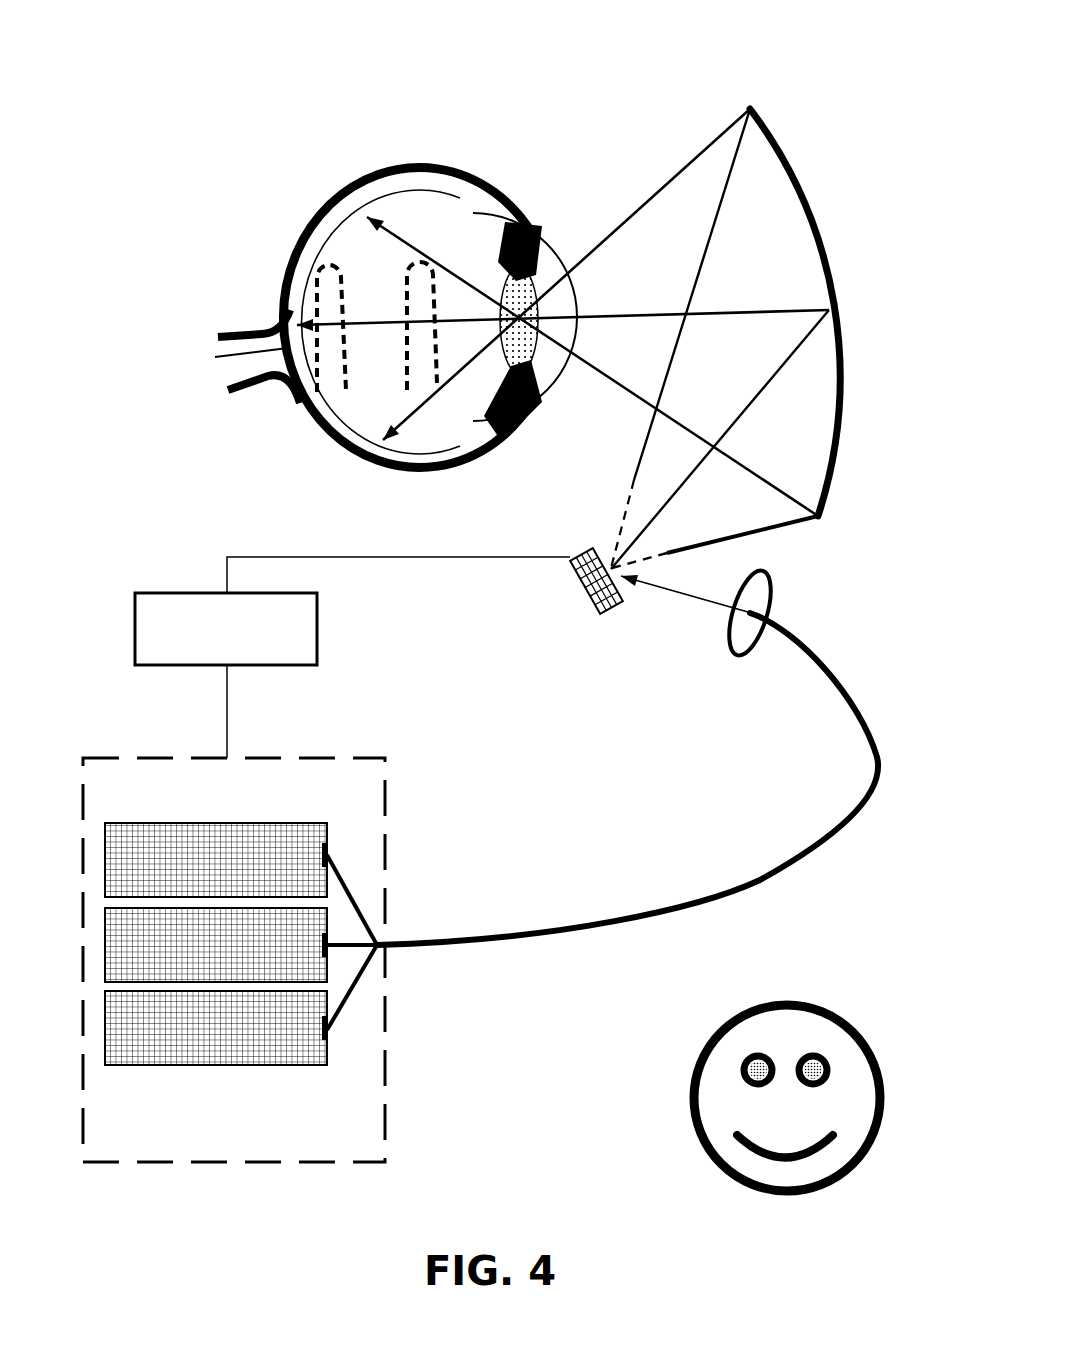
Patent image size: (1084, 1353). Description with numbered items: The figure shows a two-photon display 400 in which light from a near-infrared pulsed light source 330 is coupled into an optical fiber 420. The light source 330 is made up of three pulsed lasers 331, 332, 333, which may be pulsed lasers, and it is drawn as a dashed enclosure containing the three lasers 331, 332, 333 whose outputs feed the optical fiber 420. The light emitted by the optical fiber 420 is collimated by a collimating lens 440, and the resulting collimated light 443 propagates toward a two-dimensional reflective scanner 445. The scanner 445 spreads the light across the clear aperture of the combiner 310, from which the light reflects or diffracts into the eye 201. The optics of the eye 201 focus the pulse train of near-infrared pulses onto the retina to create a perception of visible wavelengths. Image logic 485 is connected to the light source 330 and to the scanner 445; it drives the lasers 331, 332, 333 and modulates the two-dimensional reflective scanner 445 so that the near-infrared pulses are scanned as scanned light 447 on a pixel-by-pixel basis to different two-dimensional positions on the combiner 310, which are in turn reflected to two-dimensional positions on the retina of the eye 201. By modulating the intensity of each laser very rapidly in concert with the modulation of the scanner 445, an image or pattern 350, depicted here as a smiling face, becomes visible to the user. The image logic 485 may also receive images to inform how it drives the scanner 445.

The two-photon display 400 is at (815, 40).
The eye 201 is at (306, 163).
The combiner 310 is at (800, 174).
The scanned light 447 is at (634, 423).
The two-dimensional reflective scanner 445 is at (584, 597).
The collimated light 443 is at (683, 597).
The collimating lens 440 is at (743, 657).
The optical fiber 420 is at (868, 790).
The image logic 485 is at (226, 675).
The near-infrared pulsed light source 330 is at (234, 960).
The pulsed laser 331 is at (216, 860).
The pulsed laser 332 is at (216, 945).
The pulsed laser 333 is at (216, 1028).
The image or pattern 350 is at (767, 1002).